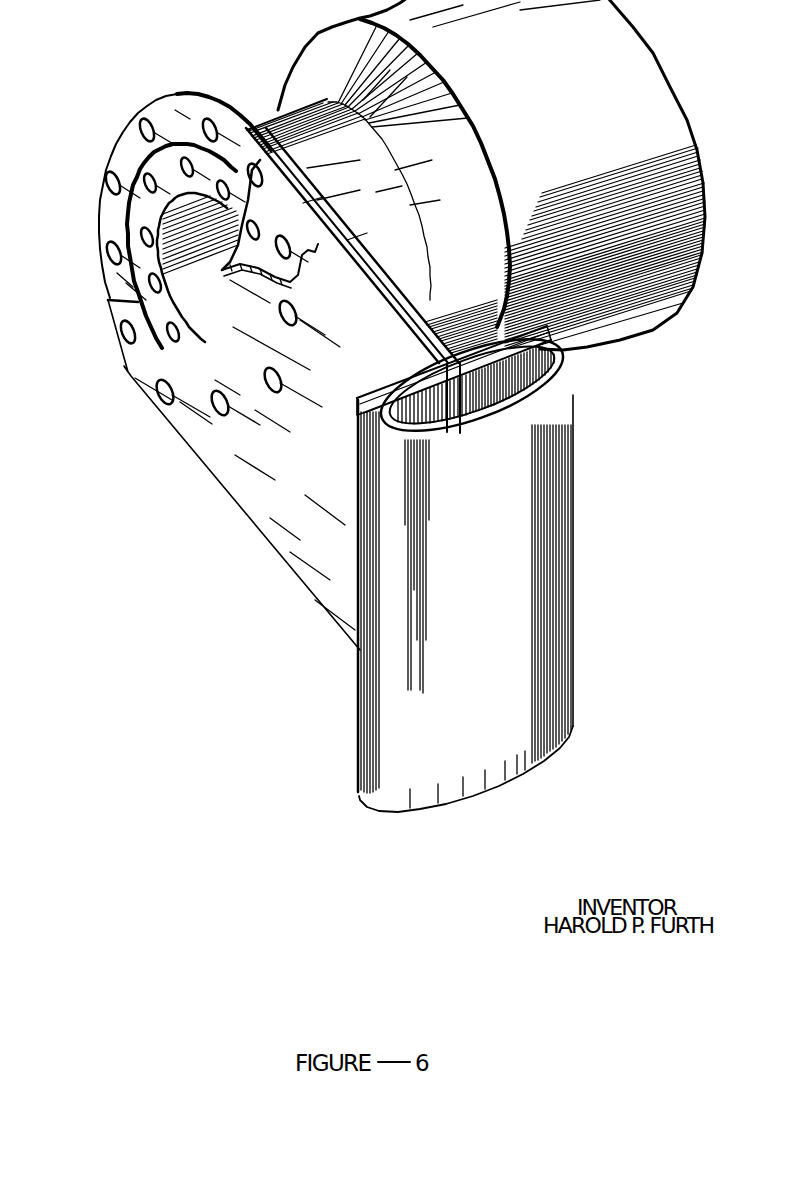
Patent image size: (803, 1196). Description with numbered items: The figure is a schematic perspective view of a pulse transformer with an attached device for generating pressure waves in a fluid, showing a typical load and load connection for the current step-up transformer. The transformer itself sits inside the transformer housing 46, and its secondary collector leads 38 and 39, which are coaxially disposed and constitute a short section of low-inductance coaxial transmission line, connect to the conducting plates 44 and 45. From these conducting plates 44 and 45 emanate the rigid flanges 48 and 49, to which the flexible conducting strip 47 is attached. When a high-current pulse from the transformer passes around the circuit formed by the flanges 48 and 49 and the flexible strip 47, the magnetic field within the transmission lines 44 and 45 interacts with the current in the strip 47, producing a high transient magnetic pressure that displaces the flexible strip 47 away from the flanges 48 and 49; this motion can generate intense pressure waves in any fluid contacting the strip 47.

The secondary collector lead 38 is at (145, 113).
The secondary collector lead 39 is at (145, 220).
The conducting plate 44 is at (345, 250).
The conducting plate 45 is at (208, 450).
The transformer housing 46 is at (637, 30).
The flexible conducting strip 47 is at (395, 797).
The rigid flange 48 is at (587, 353).
The rigid flange 49 is at (360, 473).